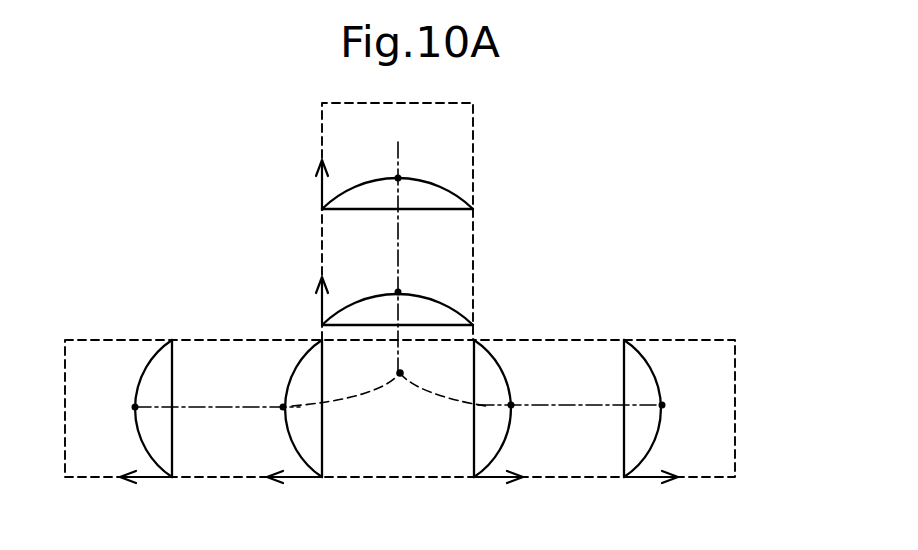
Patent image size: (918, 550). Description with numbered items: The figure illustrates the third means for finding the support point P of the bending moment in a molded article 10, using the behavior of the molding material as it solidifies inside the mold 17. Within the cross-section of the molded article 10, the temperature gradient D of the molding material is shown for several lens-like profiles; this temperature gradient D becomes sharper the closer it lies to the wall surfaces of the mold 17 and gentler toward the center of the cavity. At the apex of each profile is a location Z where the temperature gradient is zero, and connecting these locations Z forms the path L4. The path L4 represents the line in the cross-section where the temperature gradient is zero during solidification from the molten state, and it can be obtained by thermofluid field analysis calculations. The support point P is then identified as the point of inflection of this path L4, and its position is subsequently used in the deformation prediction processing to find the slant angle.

The mold 17 is at (473, 115).
The molded article 10 is at (718, 415).
The temperature gradient D is at (453, 190).
The location where the temperature gradient becomes zero Z is at (398, 178).
The support point P is at (400, 377).
The path L4 is at (580, 406).